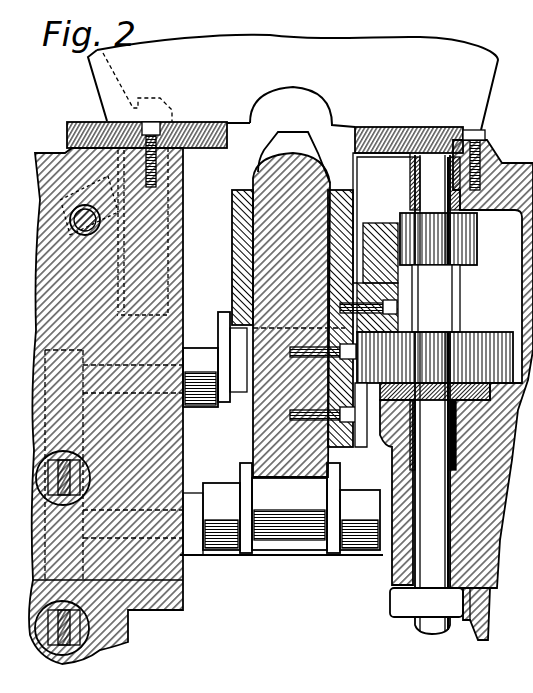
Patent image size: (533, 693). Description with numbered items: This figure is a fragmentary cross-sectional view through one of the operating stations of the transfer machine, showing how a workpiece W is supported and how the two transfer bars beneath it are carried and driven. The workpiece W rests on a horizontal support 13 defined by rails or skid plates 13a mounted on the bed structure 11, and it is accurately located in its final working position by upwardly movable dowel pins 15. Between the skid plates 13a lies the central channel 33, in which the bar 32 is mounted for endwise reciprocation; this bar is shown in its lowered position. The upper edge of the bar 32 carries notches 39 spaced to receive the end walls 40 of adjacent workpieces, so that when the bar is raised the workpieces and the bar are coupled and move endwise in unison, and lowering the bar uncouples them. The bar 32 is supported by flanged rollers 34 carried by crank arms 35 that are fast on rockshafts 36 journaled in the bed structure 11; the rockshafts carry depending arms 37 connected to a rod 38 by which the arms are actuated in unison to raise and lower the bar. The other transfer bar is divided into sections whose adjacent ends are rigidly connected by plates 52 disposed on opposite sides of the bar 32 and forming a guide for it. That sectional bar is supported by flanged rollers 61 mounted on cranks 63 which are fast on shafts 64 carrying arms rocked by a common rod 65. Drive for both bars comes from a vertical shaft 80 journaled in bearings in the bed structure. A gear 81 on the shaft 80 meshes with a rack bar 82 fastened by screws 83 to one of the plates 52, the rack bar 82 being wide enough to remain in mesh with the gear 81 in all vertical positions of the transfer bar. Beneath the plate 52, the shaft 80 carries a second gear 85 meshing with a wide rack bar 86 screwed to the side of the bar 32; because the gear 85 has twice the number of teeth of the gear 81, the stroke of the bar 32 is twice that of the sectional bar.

The bed structure 11 is at (498, 580).
The horizontal support 13 is at (196, 120).
The skid plates 13a is at (205, 125).
The dowel pins 15 is at (150, 100).
The bar 32 is at (262, 437).
The central channel 33 is at (340, 136).
The flanged rollers 34 is at (304, 545).
The crank arms 35 is at (218, 545).
The rockshafts 36 is at (130, 552).
The depending arms 37 is at (88, 583).
The rod 38 is at (80, 624).
The notches 39 is at (288, 140).
The end walls 40 is at (388, 52).
The plates 52 is at (237, 255).
The flanged rollers 61 is at (240, 395).
The cranks 63 is at (203, 410).
The shafts 64 is at (122, 405).
The rod 65 is at (75, 482).
The vertical shaft 80 is at (420, 634).
The gear 81 is at (470, 249).
The rack bar 82 is at (378, 228).
The screws 83 is at (397, 307).
The second gear 85 is at (480, 345).
The wide rack bar 86 is at (377, 445).
The workpiece W is at (458, 56).